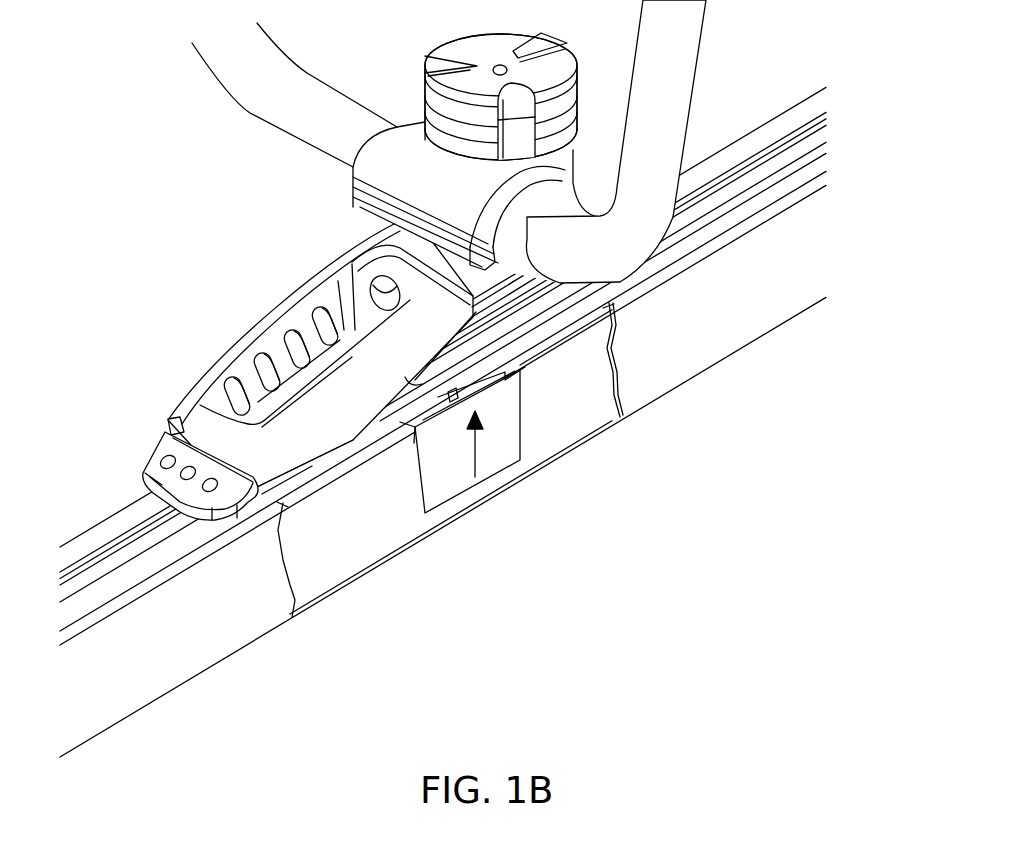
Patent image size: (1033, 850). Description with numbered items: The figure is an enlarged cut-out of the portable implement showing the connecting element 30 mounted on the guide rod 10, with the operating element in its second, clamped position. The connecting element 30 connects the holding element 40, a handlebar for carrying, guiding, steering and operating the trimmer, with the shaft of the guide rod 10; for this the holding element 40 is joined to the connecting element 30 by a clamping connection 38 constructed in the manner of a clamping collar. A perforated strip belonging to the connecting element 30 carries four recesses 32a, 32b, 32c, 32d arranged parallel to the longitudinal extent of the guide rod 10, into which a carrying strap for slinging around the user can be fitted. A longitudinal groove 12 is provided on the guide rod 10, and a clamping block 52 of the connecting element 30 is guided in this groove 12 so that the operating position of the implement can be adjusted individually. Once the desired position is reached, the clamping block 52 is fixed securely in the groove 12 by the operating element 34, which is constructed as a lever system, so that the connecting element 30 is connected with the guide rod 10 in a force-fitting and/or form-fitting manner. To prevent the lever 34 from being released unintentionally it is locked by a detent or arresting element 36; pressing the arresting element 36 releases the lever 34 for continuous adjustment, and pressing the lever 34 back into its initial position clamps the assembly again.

The guide rod 10 is at (738, 322).
The longitudinal groove 12 is at (120, 558).
The connecting element 30 is at (203, 218).
The recess 32a is at (232, 392).
The recess 32b is at (260, 363).
The recess 32c is at (291, 335).
The recess 32d is at (322, 312).
The operating element 34 is at (350, 427).
The arresting element 36 is at (150, 463).
The clamping connection 38 is at (440, 190).
The holding element 40 is at (327, 122).
The clamping block 52 is at (490, 463).